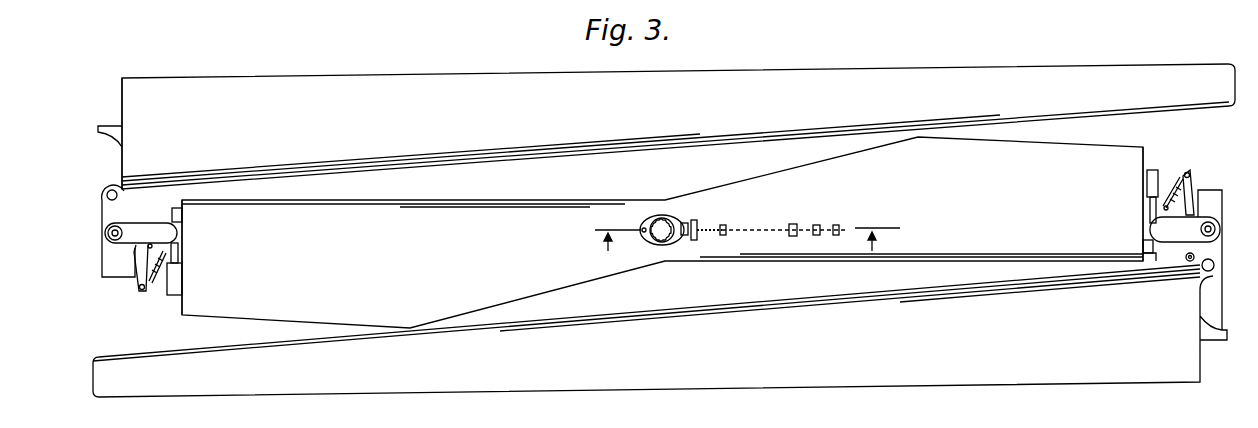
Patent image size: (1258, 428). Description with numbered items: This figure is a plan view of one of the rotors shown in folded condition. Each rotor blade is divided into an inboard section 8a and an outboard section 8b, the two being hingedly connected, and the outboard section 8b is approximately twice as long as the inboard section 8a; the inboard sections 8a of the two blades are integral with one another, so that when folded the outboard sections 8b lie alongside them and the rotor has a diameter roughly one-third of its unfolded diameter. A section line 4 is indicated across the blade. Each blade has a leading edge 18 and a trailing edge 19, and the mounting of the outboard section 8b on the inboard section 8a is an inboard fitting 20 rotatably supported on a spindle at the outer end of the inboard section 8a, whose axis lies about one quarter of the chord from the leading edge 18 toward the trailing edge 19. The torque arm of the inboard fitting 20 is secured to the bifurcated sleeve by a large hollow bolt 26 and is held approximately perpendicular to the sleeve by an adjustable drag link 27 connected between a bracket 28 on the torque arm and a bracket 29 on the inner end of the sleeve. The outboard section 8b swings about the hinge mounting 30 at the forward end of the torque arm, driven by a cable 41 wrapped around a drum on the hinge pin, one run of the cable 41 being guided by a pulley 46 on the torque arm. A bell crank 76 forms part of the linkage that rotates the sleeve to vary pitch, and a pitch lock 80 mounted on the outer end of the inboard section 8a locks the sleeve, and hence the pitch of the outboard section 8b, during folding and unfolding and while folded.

The inboard section 8a is at (452, 257).
The outboard section 8b is at (630, 122).
The section line 4- 4 is at (746, 228).
The leading edge 18 is at (216, 198).
The trailing edge 19 is at (193, 316).
The inboard fitting 20 is at (150, 222).
The hollow bolt 26 is at (108, 237).
The drag link 27 is at (153, 284).
The bracket 28 is at (140, 291).
The bracket 29 is at (1173, 209).
The hinge mounting 30 is at (111, 189).
The cable 41 is at (1156, 259).
The pulley 46 is at (1190, 262).
The bell crank 76 is at (184, 214).
The pitch lock 80 is at (171, 296).